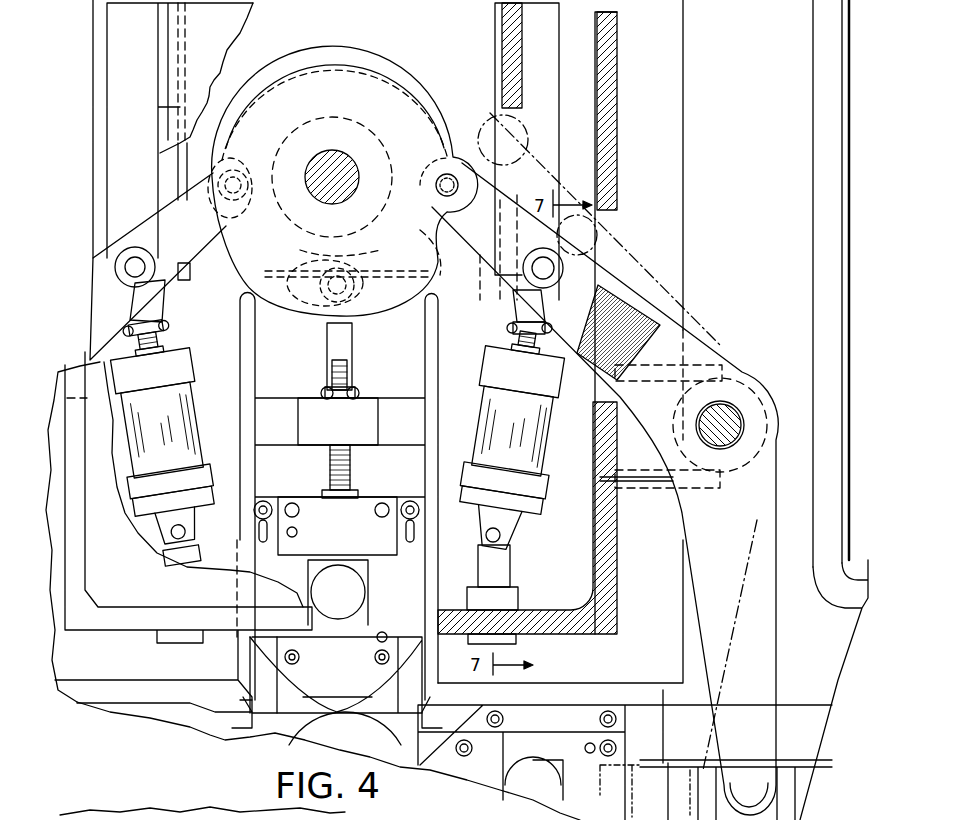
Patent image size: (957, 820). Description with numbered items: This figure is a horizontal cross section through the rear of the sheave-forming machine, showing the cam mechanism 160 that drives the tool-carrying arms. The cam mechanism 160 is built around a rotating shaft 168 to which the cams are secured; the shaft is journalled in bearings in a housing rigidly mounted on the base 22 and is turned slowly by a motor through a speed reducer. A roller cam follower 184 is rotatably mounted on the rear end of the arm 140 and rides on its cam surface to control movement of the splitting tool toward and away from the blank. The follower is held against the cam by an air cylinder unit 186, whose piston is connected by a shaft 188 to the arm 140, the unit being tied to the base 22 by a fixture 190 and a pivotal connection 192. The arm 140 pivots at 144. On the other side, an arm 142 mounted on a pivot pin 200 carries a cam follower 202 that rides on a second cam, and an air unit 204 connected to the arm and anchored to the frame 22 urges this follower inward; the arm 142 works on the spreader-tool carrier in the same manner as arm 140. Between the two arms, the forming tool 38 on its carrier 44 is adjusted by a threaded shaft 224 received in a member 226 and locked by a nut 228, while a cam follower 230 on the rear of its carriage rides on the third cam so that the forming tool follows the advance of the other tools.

The cam mechanism 160 is at (388, 95).
The rotating shaft 168 is at (352, 182).
The roller cam follower 184 is at (443, 127).
The cam follower 202 is at (230, 200).
The cam follower 230 is at (358, 310).
The arm 142 is at (94, 284).
The pivot pin 200 is at (138, 280).
The air unit 204 is at (183, 376).
The nut 228 is at (325, 395).
The member 226 is at (362, 434).
The threaded shaft 224 is at (323, 483).
The carrier 44 is at (354, 542).
The forming tool 38 is at (352, 695).
The air cylinder unit 186 is at (487, 378).
The shaft 188 is at (538, 345).
The pivotal connection 192 is at (500, 536).
The fixture 190 is at (510, 582).
The base 22 is at (619, 612).
The pivot shaft 144 is at (733, 413).
The arm 140 is at (742, 531).